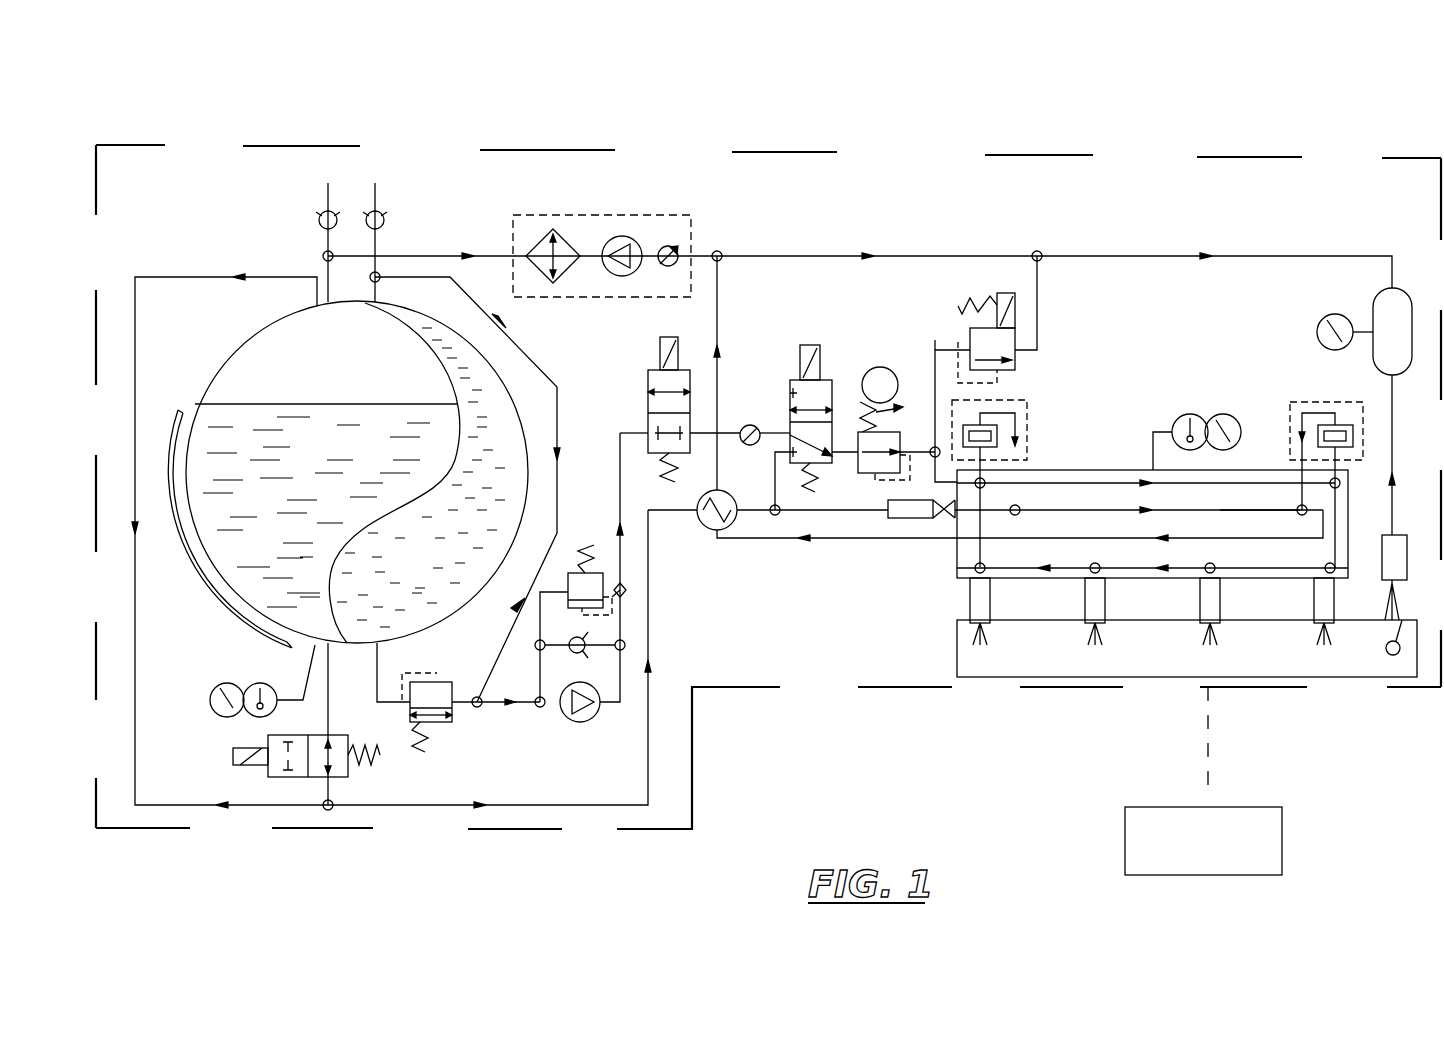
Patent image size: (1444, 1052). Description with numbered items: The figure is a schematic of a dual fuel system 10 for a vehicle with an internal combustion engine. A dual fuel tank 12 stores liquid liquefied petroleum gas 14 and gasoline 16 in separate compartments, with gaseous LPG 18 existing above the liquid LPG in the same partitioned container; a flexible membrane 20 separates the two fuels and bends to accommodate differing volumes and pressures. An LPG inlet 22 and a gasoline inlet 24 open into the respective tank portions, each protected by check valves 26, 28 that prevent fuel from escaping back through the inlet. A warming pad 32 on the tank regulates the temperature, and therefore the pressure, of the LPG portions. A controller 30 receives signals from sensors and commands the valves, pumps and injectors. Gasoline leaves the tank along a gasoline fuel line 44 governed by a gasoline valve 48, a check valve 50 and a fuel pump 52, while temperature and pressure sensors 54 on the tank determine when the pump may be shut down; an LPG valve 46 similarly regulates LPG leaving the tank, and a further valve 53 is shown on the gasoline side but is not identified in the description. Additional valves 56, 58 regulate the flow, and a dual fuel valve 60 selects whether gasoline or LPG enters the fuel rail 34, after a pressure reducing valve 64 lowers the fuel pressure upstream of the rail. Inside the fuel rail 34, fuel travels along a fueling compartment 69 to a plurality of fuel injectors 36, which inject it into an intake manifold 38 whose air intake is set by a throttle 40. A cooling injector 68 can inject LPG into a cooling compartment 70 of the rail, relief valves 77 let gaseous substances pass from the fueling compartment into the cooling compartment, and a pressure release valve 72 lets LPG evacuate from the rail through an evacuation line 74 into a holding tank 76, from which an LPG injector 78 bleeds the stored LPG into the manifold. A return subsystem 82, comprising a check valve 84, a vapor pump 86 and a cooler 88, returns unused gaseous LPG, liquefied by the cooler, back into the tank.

The dual fuel system 10 is at (822, 125).
The dual fuel tank 12 is at (250, 338).
The liquefied petroleum gas 14 is at (382, 473).
The gasoline 16 is at (434, 553).
The gaseous LPG 18 is at (340, 392).
The membrane 20 is at (455, 388).
The LPG inlet 22 is at (328, 186).
The gasoline inlet 24 is at (375, 186).
The check valve 26 is at (318, 222).
The check valve 28 is at (384, 220).
The controller 30 is at (1282, 856).
The warming pad 32 is at (222, 578).
The fuel rail 34 is at (957, 570).
The fuel injectors 36 is at (1200, 598).
The intake manifold 38 is at (975, 660).
The throttle 40 is at (1390, 655).
The gasoline fuel line 44 is at (622, 455).
The LPG valve 46 is at (350, 775).
The gasoline valve 48 is at (447, 725).
The check valve 50 is at (560, 648).
The fuel pump 52 is at (575, 722).
The relief valve 53 is at (582, 572).
The temperature and pressure sensors 54 is at (212, 697).
The valve 56 is at (648, 397).
The valve 58 is at (750, 424).
The dual fuel valve 60 is at (830, 372).
The pressure reducing valve 64 is at (898, 398).
The cooling injector 68 is at (890, 520).
The fueling compartment 69 is at (1120, 483).
The cooling compartment 70 is at (1250, 510).
The pressure release valve 72 is at (1015, 373).
The evacuation line 74 is at (1165, 257).
The holding tank 76 is at (1380, 308).
The relief valve 77 is at (1027, 437).
The LPG injector 78 is at (1408, 548).
The return subsystem 82 is at (692, 213).
The check valve 84 is at (672, 244).
The vapor pump 86 is at (630, 240).
The cooler 88 is at (563, 228).